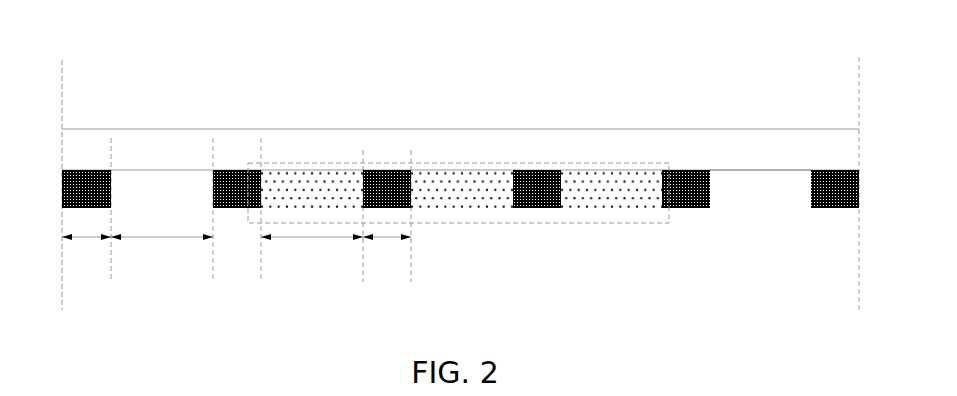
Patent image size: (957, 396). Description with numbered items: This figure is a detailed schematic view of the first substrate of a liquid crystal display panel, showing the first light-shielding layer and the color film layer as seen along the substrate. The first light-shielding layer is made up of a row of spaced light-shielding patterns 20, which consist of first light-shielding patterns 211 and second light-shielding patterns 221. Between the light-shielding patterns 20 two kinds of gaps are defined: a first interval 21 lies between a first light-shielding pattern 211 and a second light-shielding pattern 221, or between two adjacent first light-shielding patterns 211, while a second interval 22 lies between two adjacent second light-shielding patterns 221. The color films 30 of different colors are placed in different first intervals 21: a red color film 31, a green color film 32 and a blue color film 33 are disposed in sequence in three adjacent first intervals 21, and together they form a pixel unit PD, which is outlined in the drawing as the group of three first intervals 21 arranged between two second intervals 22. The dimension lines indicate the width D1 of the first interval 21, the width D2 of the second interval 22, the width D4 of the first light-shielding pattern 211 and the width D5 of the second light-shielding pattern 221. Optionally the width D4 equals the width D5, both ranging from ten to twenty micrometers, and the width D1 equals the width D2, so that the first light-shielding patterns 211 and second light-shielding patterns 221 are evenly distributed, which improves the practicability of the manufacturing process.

The light-shielding patterns 20 is at (624, 230).
The first interval 21 is at (646, 181).
The second interval 22 is at (744, 183).
The color films 30 is at (461, 133).
The red color film 31 is at (301, 182).
The green color film 32 is at (453, 182).
The blue color film 33 is at (611, 155).
The first light-shielding pattern 211 is at (535, 208).
The second light-shielding pattern 221 is at (698, 211).
The pixel unit PD is at (447, 223).
The width of the first interval D1 is at (312, 249).
The width of the second interval D2 is at (162, 249).
The width of the first light-shielding pattern D4 is at (387, 249).
The width of the second light-shielding pattern D5 is at (86, 249).